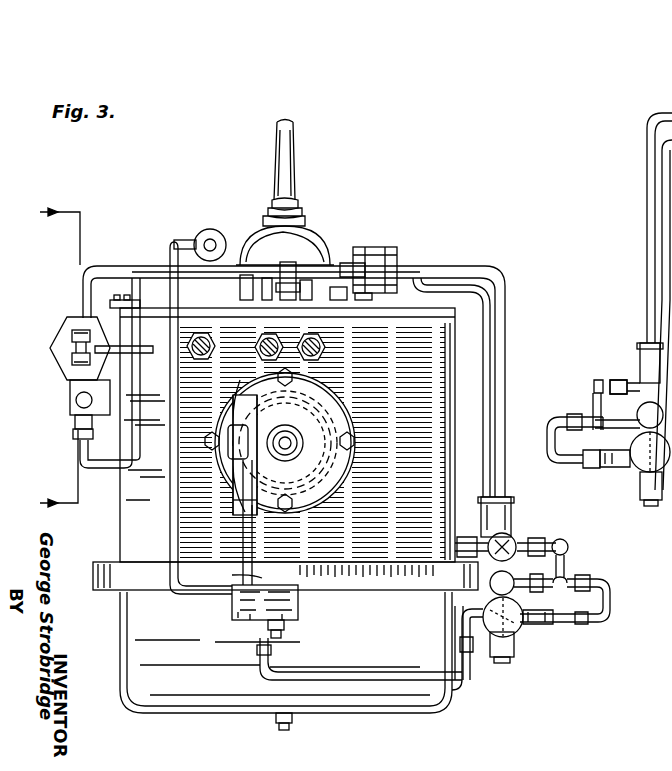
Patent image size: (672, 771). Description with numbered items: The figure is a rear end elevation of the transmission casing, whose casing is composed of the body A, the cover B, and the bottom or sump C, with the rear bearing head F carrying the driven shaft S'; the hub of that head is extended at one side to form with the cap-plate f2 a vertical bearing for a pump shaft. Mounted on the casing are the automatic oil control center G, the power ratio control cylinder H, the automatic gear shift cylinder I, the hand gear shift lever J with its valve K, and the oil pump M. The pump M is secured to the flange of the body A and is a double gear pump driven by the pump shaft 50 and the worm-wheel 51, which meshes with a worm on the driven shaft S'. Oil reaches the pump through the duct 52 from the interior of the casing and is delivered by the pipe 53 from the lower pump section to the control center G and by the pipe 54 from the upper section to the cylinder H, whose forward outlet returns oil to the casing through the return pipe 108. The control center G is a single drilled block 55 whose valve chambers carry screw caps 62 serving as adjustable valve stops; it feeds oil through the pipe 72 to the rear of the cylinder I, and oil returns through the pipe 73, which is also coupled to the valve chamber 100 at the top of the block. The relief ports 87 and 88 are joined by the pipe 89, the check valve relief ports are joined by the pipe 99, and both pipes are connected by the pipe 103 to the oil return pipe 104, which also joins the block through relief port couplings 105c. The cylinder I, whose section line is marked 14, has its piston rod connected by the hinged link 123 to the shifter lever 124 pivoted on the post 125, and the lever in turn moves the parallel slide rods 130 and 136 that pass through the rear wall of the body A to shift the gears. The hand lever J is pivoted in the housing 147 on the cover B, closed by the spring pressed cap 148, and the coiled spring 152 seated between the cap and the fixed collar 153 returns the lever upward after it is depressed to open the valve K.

The clutch member 14 is at (48, 359).
The pump shaft 50 is at (247, 534).
The worm-wheel 51 is at (242, 433).
The duct 52 is at (273, 570).
The pipe 53 is at (462, 693).
The pipe 54 is at (170, 546).
The block 55 is at (517, 643).
The screw cap 62 is at (493, 660).
The pipe 72 is at (96, 468).
The pipe 73 is at (122, 268).
The relief port 87 is at (514, 538).
The relief port 88 is at (632, 380).
The pipe 89 is at (567, 529).
The pipe 99 is at (558, 590).
The valve chamber 100 is at (513, 515).
The pipe 103 is at (610, 610).
The oil return pipe 104 is at (604, 467).
The relief port coupling 105c is at (527, 624).
The return pipe 108 is at (201, 332).
The hinged link 123 is at (73, 337).
The shifter lever 124 is at (72, 344).
The post 125 is at (166, 263).
The slide rod 130 is at (272, 342).
The slide rod 136 is at (310, 342).
The housing 147 is at (257, 257).
The spring pressed cap 148 is at (265, 227).
The coiled spring 152 is at (302, 218).
The fixed collar 153 is at (296, 206).
The body A is at (122, 515).
The cover B is at (408, 268).
The bottom or sump C is at (388, 716).
The rear bearing head F is at (230, 475).
The cap-plate f2 is at (234, 500).
The automatic oil control center G is at (580, 552).
The power ratio control cylinder H is at (214, 230).
The automatic gear shift cylinder I is at (57, 342).
The hand gear shift lever J is at (287, 138).
The valve K is at (372, 248).
The oil pump M is at (227, 610).
The driven shaft S' is at (285, 432).